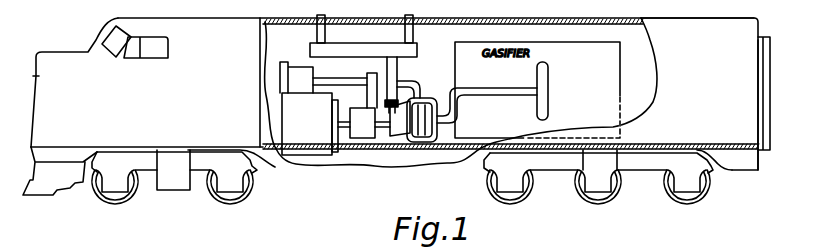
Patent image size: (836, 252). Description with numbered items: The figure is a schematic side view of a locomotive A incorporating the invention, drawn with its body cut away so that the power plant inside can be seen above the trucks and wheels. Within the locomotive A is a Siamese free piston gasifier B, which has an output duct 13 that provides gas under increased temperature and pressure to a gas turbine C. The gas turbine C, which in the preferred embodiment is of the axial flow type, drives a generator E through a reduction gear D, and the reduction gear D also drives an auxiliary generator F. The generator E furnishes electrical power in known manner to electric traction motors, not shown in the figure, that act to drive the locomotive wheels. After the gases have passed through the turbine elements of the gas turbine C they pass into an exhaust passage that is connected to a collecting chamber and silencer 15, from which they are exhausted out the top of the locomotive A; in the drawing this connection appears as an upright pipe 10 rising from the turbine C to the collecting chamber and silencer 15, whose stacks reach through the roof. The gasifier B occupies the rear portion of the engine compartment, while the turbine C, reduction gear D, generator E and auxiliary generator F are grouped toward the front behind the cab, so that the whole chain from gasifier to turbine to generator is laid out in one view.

The locomotive A is at (126, 207).
The Siamese free piston gasifier B is at (616, 95).
The gas turbine C is at (398, 115).
The reduction gear D is at (356, 108).
The generator E is at (283, 105).
The auxiliary generator F is at (296, 72).
The exhaust pipe 10 is at (387, 62).
The output duct 13 is at (506, 92).
The collecting chamber and silencer 15 is at (410, 51).